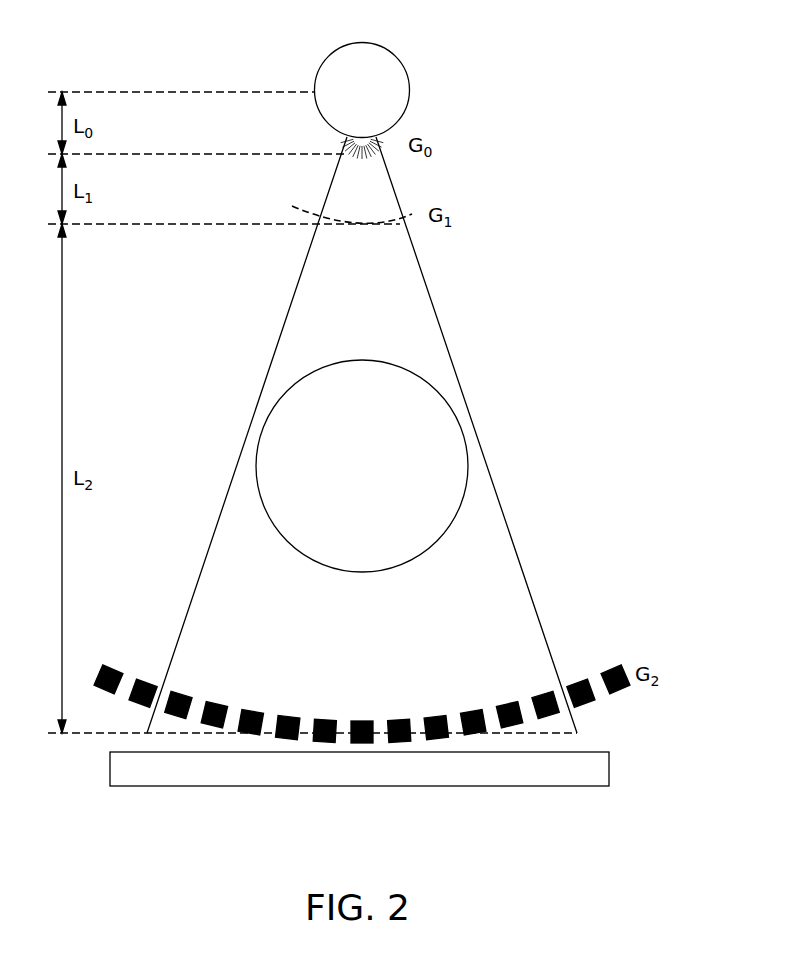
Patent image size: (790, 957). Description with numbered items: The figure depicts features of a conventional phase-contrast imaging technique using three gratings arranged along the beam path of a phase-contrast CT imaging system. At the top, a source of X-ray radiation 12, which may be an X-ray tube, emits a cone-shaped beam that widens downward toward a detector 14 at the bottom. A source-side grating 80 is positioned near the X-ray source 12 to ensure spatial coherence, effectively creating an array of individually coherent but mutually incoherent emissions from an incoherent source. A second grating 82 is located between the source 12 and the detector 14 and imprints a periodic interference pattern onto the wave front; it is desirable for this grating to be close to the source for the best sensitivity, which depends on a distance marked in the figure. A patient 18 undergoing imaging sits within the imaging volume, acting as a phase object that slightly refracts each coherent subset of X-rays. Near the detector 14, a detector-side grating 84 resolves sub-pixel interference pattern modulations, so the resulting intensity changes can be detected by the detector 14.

The X-ray source 12 is at (407, 50).
The source-side grating G0 80 is at (318, 136).
The grating G1 82 is at (292, 204).
The patient 18 is at (442, 383).
The grating G2 84 is at (137, 668).
The detector 14 is at (557, 797).